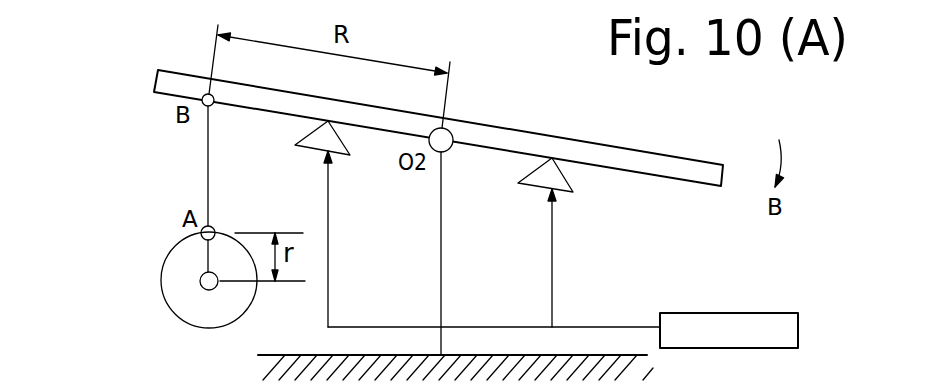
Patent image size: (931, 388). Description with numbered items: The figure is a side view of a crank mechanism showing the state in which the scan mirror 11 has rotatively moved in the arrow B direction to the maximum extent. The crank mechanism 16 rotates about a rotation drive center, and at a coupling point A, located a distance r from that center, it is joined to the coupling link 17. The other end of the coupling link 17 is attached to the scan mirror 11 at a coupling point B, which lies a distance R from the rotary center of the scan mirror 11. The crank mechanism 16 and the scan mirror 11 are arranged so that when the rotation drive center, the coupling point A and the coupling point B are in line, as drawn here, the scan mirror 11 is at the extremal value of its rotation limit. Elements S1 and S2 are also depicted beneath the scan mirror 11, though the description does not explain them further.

The scan mirror 11 is at (657, 158).
The crank mechanism 16 is at (162, 247).
The coupling link 17 is at (207, 173).
The sensor S1 is at (305, 224).
The sensor S2 is at (525, 242).